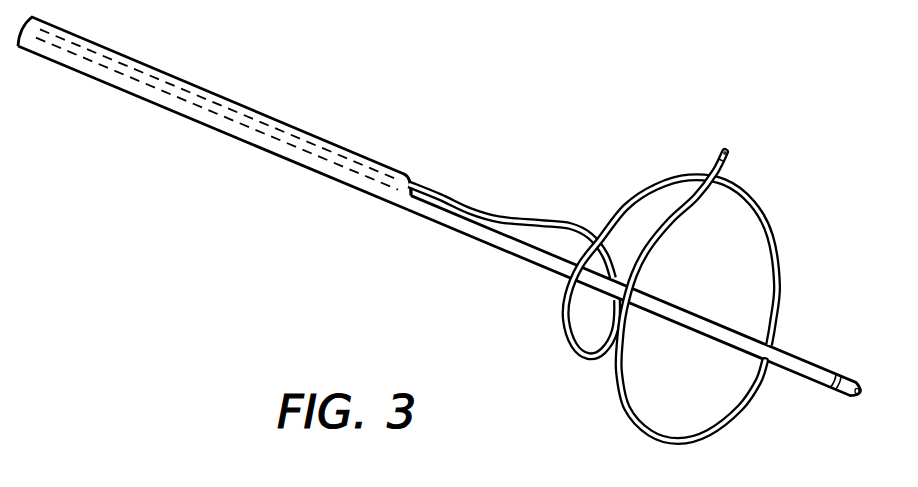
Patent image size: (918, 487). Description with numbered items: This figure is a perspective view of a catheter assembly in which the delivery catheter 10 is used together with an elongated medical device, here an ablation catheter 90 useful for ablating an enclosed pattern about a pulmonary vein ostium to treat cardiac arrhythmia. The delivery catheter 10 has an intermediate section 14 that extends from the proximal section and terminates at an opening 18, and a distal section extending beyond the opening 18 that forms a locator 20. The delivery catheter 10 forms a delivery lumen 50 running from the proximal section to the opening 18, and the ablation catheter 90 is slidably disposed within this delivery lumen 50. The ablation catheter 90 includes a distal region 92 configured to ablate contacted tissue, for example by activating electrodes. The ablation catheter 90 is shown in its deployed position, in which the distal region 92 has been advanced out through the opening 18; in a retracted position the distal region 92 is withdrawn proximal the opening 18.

The delivery catheter 10 is at (439, 236).
The intermediate section 14 is at (243, 113).
The opening 18 is at (410, 172).
The locator 20 is at (788, 372).
The delivery lumen 50 is at (93, 56).
The ablation catheter 90 is at (620, 290).
The distal region 92 is at (765, 218).